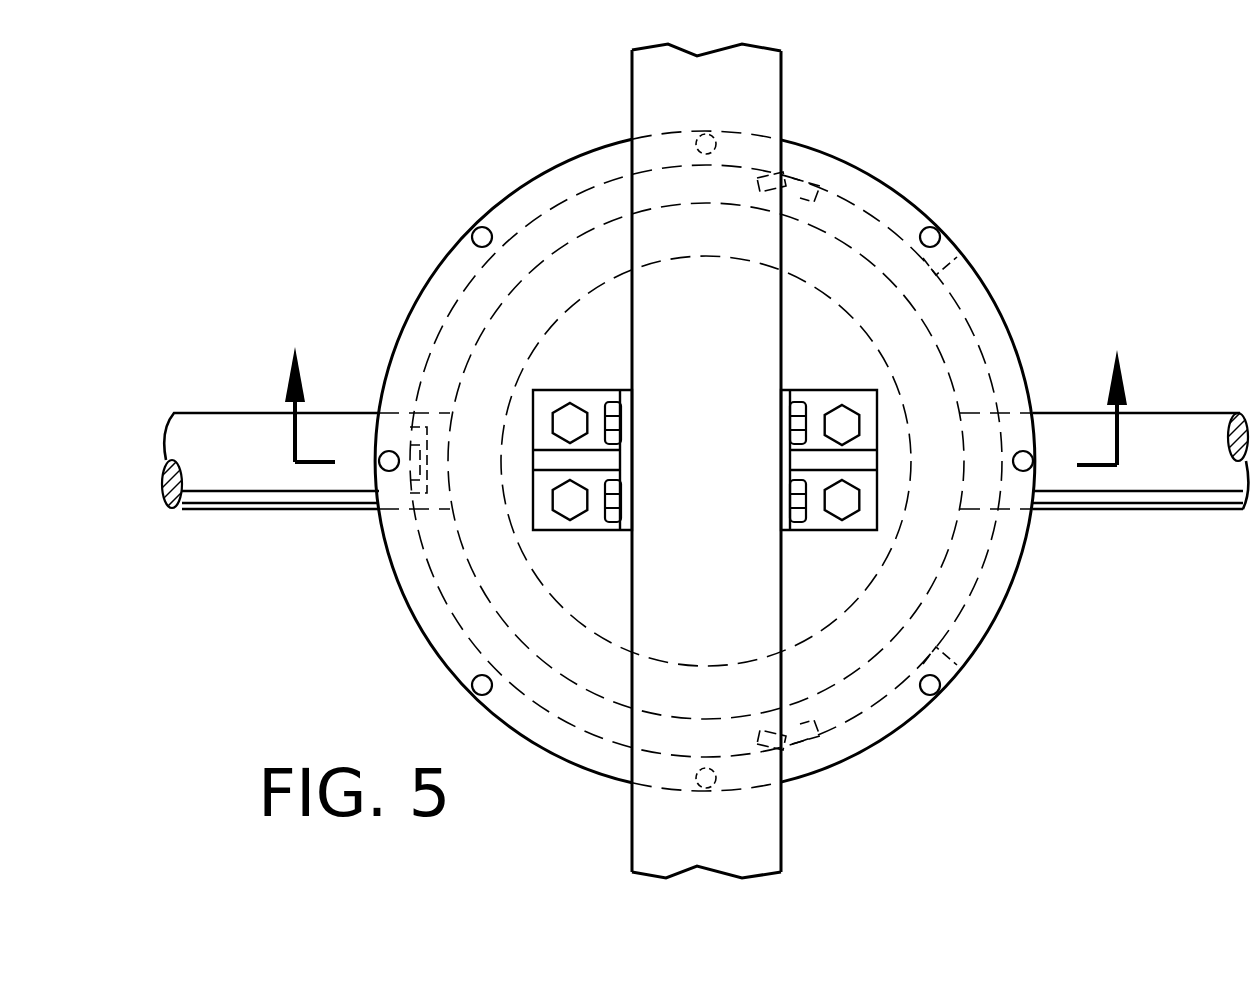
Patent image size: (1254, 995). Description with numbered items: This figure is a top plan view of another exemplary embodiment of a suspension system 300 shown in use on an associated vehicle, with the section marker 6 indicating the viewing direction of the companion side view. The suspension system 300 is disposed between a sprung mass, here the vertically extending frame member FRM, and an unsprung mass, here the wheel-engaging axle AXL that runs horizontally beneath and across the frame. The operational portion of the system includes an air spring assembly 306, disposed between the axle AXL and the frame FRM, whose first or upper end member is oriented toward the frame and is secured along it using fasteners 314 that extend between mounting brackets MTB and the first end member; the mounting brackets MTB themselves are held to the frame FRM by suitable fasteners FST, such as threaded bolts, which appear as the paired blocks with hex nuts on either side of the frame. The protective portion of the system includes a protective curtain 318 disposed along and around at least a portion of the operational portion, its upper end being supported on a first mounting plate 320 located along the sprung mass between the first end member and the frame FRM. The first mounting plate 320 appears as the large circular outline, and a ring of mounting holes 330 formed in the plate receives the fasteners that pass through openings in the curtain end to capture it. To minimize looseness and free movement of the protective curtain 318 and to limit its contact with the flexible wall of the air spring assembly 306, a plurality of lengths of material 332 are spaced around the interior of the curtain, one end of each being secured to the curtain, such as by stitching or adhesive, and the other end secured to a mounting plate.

The suspension system 300 is at (978, 145).
The air spring assembly 306 is at (562, 218).
The fasteners 314 is at (570, 502).
The protective curtain 318 is at (420, 594).
The first mounting plate 320 is at (447, 267).
The mounting holes 330 is at (473, 230).
The lengths of material 332 is at (795, 175).
The axle AXL is at (222, 425).
The frame member FRM is at (781, 57).
The fasteners FST is at (617, 403).
The mounting brackets MTB is at (535, 405).
The section line 6 is at (704, 387).